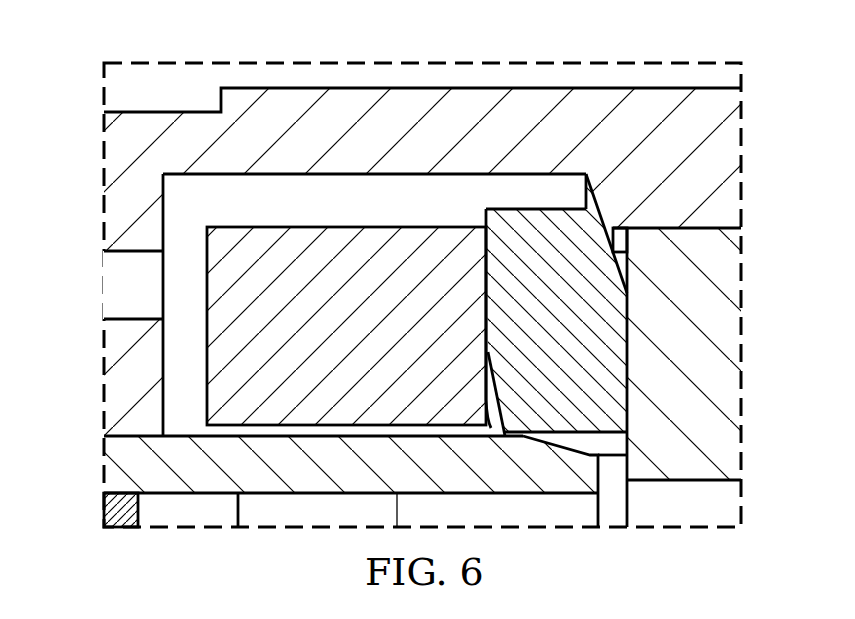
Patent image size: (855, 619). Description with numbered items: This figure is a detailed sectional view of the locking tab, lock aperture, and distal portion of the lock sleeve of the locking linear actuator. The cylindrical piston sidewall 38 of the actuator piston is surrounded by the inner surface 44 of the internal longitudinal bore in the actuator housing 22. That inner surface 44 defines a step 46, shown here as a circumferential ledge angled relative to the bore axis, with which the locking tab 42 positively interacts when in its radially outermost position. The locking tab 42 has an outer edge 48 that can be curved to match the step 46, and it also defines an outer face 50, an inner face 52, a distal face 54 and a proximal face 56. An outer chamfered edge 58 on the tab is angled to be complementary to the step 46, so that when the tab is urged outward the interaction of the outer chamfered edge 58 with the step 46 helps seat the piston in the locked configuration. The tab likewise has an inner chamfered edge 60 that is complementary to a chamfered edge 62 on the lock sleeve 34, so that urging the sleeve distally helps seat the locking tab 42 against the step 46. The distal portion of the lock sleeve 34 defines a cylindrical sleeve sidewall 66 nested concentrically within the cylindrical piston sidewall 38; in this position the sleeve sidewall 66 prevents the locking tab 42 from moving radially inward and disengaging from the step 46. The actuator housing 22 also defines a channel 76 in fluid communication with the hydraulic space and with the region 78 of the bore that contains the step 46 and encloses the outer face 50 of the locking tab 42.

The actuator housing 22 is at (308, 86).
The channel 76 is at (120, 250).
The inner surface 44 is at (197, 178).
The region 78 is at (265, 176).
The cylindrical piston sidewall 38 is at (362, 339).
The locking tab 42 is at (552, 215).
The outer face 50 is at (503, 209).
The step 46 is at (577, 182).
The outer edge 48 is at (602, 207).
The proximal face 56 is at (485, 273).
The inner chamfered edge 60 is at (498, 370).
The outer chamfered edge 58 is at (612, 244).
The distal face 54 is at (627, 363).
The lock sleeve 34 is at (275, 494).
The cylindrical sleeve sidewall 66 is at (272, 432).
The chamfered edge 62 is at (588, 452).
The inner face 52 is at (576, 437).